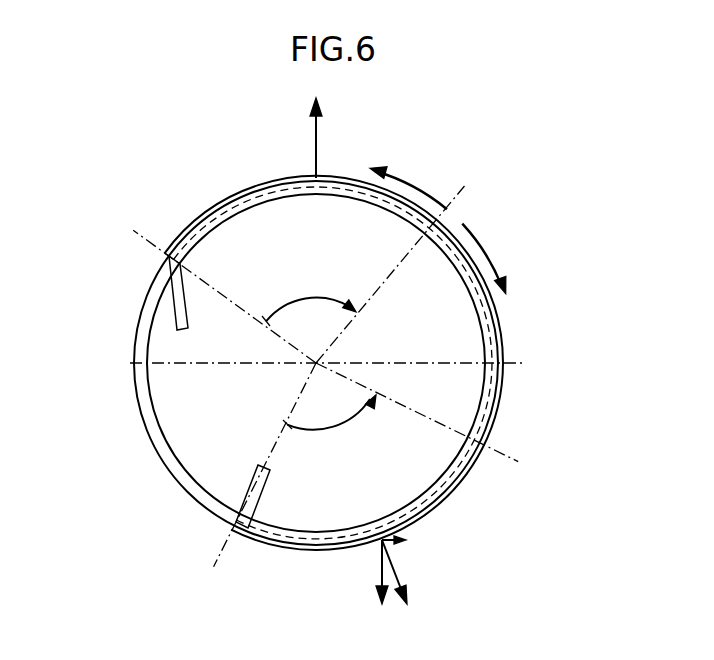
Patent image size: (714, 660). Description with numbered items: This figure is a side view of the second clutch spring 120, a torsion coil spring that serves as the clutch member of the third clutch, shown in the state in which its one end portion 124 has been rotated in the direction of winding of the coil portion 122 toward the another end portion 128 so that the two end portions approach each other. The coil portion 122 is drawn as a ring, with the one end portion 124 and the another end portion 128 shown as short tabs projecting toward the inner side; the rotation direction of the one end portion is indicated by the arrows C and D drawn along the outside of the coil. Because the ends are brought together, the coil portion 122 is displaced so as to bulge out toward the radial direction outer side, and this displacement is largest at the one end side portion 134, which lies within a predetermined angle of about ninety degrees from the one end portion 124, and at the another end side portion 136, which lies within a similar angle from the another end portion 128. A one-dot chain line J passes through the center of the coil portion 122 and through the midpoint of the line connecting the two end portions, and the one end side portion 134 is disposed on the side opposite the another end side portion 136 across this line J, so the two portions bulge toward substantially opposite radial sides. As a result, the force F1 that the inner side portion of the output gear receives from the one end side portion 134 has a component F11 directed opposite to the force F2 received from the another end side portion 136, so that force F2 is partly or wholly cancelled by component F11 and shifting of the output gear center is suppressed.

The second clutch spring 120 is at (200, 184).
The coil portion 122 is at (137, 333).
The one end portion 124 is at (260, 490).
The another end portion 128 is at (190, 328).
The one end side portion 134 is at (427, 515).
The another end side portion 136 is at (263, 187).
The force F1 is at (397, 546).
The force F2 is at (318, 148).
The component F11 is at (380, 577).
The rotation direction C is at (427, 198).
The rotation direction D is at (487, 258).
The one-dot chain line J is at (421, 366).